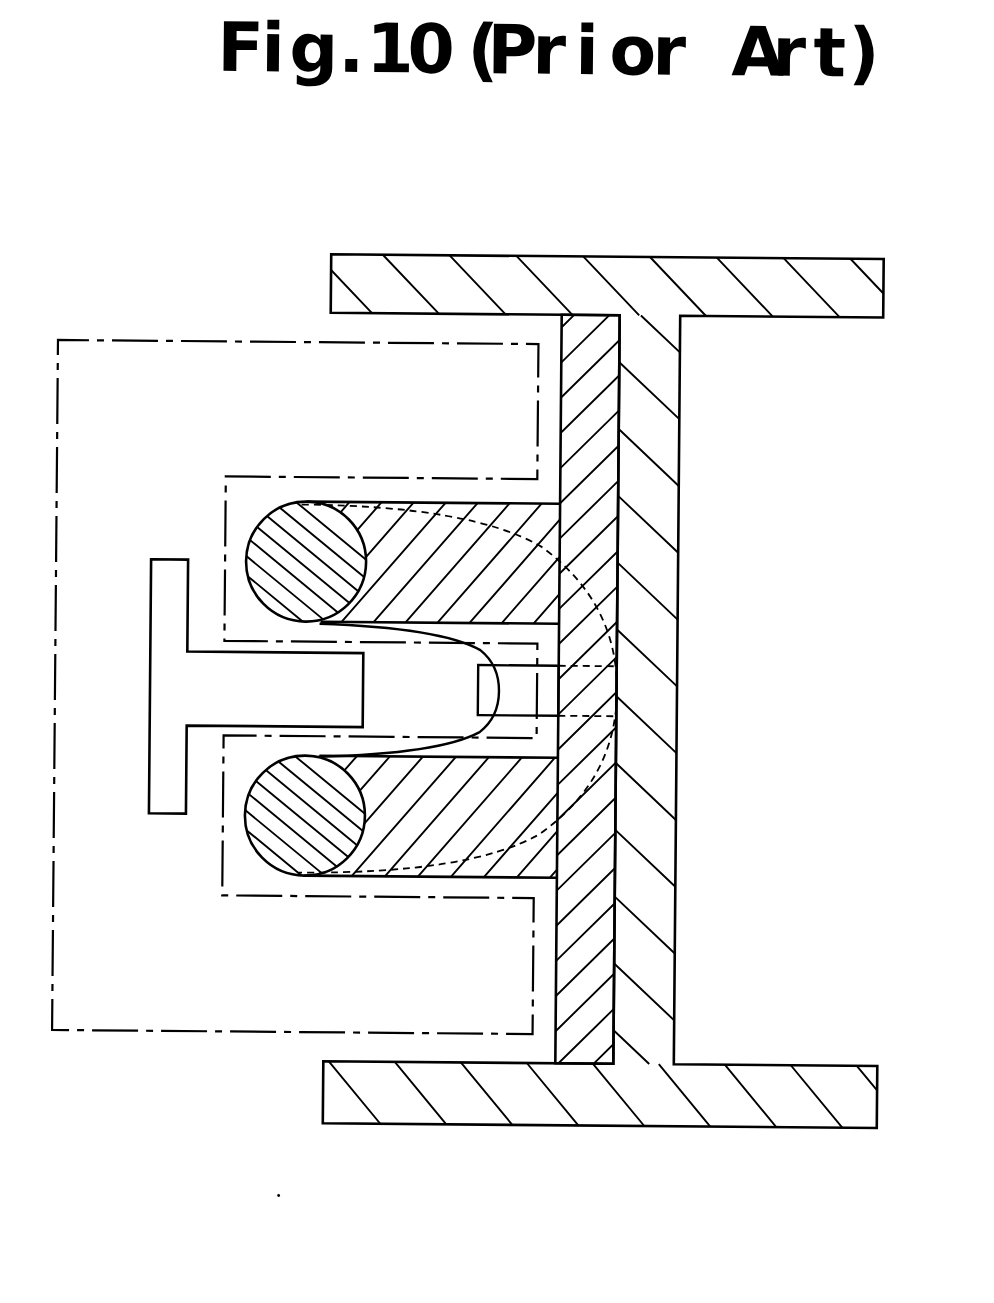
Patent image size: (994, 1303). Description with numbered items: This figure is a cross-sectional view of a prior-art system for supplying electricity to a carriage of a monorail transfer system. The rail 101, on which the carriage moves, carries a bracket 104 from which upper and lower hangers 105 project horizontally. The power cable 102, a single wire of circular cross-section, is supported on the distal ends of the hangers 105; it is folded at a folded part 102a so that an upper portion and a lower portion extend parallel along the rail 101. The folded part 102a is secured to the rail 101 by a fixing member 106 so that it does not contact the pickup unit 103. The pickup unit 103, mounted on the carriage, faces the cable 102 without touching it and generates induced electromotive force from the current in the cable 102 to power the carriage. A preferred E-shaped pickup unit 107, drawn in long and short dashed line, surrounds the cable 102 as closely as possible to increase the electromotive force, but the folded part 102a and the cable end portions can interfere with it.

The rail 101 is at (773, 277).
The power cable 102 is at (431, 691).
The folded part 102a is at (490, 652).
The pickup unit 103 is at (167, 572).
The bracket 104 is at (600, 422).
The hanger 105 is at (471, 545).
The fixing member 106 is at (525, 689).
The pickup unit 107 is at (155, 1034).